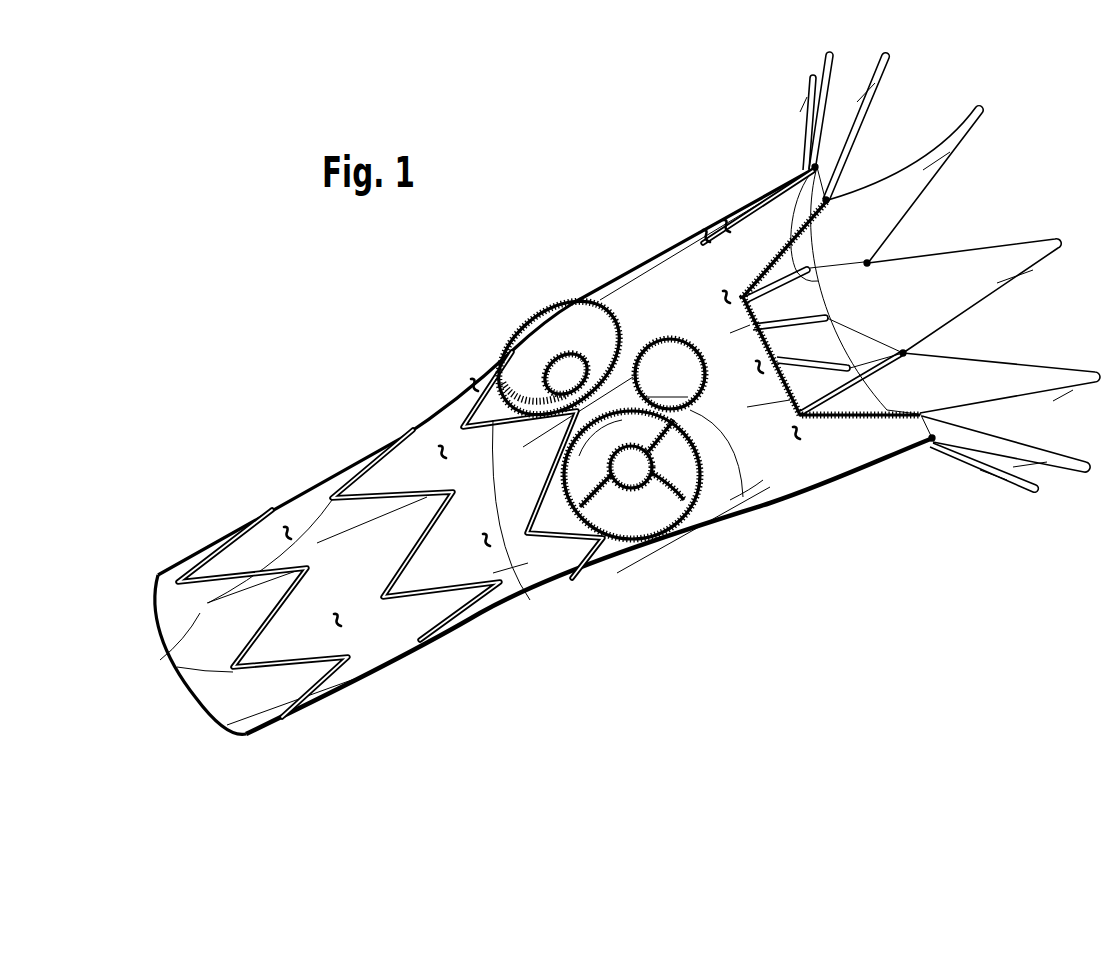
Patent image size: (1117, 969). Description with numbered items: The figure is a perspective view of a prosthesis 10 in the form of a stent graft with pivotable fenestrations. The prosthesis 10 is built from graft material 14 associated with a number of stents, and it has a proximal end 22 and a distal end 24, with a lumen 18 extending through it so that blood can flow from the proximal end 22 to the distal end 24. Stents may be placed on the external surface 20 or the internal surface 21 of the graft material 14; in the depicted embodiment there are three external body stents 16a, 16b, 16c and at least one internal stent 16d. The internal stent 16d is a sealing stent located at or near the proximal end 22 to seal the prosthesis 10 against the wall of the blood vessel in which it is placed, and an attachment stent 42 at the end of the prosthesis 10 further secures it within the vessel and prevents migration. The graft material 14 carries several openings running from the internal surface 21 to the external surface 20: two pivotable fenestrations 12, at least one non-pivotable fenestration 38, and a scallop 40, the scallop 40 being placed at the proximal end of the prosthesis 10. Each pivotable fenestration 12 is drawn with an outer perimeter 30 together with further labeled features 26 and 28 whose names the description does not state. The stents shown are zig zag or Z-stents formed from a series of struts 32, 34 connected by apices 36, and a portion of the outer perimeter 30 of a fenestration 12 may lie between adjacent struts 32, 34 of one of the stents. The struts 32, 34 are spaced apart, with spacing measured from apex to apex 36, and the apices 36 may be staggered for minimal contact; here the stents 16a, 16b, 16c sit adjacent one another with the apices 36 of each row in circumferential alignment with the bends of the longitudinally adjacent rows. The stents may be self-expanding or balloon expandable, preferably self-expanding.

The prosthesis 10 is at (814, 568).
The pivotable fenestrations 12 is at (572, 355).
The graft material 14 is at (357, 588).
The external body stent 16a is at (470, 390).
The external body stent 16b is at (340, 473).
The external body stent 16c is at (207, 547).
The internal stent 16d is at (790, 247).
The lumen 18 is at (830, 337).
The external surface 20 is at (703, 222).
The internal surface 21 is at (817, 273).
The proximal end 22 is at (777, 183).
The distal end 24 is at (200, 613).
The inner ring 26 is at (567, 353).
The spoke 28 is at (527, 367).
The outer perimeter 30 is at (703, 467).
The strut 32 is at (530, 600).
The strut 34 is at (473, 387).
The apices 36 is at (177, 667).
The non-pivotable fenestration 38 is at (763, 480).
The scallop 40 is at (838, 420).
The attachment stent 42 is at (1000, 243).